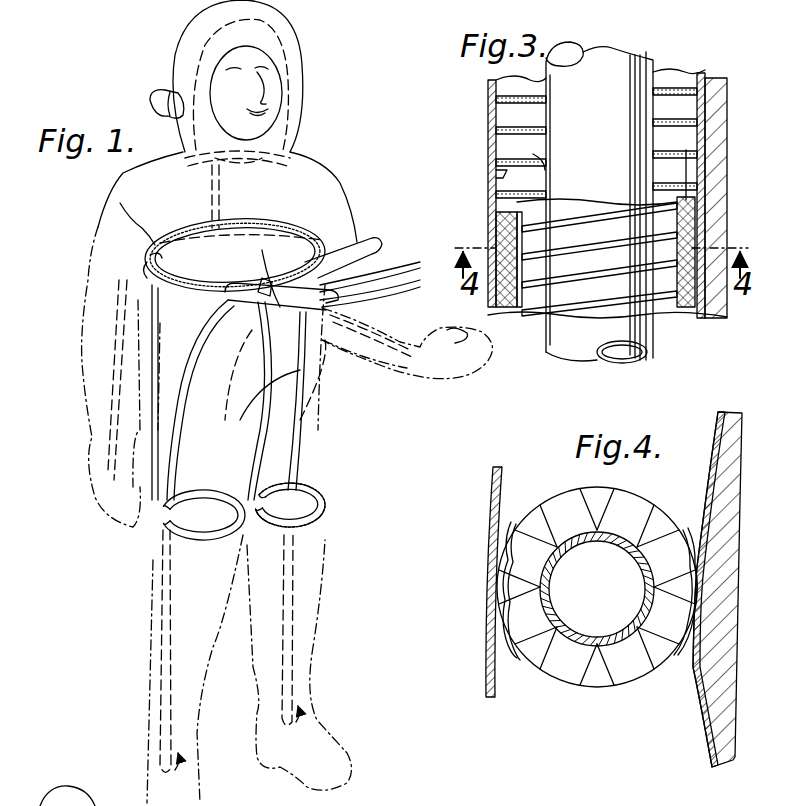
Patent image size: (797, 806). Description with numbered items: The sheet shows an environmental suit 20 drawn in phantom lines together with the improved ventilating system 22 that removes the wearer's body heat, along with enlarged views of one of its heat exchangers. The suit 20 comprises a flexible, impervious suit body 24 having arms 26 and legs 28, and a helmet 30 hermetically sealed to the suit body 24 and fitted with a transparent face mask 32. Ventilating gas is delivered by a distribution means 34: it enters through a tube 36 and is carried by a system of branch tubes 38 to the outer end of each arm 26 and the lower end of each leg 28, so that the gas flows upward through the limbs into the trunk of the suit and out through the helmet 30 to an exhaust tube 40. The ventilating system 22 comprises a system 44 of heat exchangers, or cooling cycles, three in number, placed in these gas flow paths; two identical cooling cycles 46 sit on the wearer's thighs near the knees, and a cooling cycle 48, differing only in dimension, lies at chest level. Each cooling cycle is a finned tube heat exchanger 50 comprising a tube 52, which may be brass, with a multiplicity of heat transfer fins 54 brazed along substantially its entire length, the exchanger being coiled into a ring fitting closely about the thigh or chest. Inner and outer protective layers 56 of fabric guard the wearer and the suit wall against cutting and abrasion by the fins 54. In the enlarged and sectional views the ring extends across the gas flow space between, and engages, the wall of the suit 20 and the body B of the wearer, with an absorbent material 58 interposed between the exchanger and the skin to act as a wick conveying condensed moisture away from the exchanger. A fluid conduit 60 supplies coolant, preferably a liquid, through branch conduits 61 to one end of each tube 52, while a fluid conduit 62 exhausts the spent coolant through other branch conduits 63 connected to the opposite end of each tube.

In FIG. 1, the environmental suit 20 is at (348, 186).
In FIG. 3, the environmental suit 20 is at (487, 80).
In FIG. 4, the environmental suit 20 is at (490, 493).
In FIG. 1, the ventilating system 22 is at (322, 242).
In FIG. 1, the suit body 24 is at (315, 160).
In FIG. 4, the suit body 24 is at (487, 674).
In FIG. 1, the arms 26 is at (84, 332).
In FIG. 1, the legs 28 is at (148, 648).
In FIG. 1, the helmet 30 is at (300, 38).
In FIG. 1, the transparent face mask 32 is at (280, 104).
In FIG. 1, the distribution means 34 is at (376, 240).
In FIG. 1, the tube 36 is at (378, 240).
In FIG. 1, the branch tubes 38 is at (120, 203).
In FIG. 1, the exhaust tube 40 is at (150, 98).
In FIG. 1, the system of heat exchangers 44 is at (322, 492).
In FIG. 1, the cooling cycle 46 is at (324, 507).
In FIG. 3, the cooling cycle 46 is at (530, 335).
In FIG. 4, the cooling cycle 46 is at (515, 580).
In FIG. 1, the cooling cycle 48 is at (145, 272).
In FIG. 1, the heat exchanger 50 is at (263, 256).
In FIG. 3, the heat exchanger 50 is at (512, 116).
In FIG. 3, the tube 52 is at (636, 56).
In FIG. 4, the tube 52 is at (616, 612).
In FIG. 3, the heat transfer fins 54 is at (535, 160).
In FIG. 4, the heat transfer fins 54 is at (616, 498).
In FIG. 3, the protective layers 56 is at (496, 176).
In FIG. 4, the protective layers 56 is at (513, 522).
In FIG. 4, the absorbent material 58 is at (704, 722).
In FIG. 1, the fluid conduit 60 is at (400, 275).
In FIG. 1, the branch conduits 61 is at (196, 386).
In FIG. 1, the fluid conduit 62 is at (410, 258).
In FIG. 1, the branch conduits 63 is at (280, 408).
In FIG. 3, the body of the wearer B is at (712, 78).
In FIG. 4, the body of the wearer B is at (728, 452).